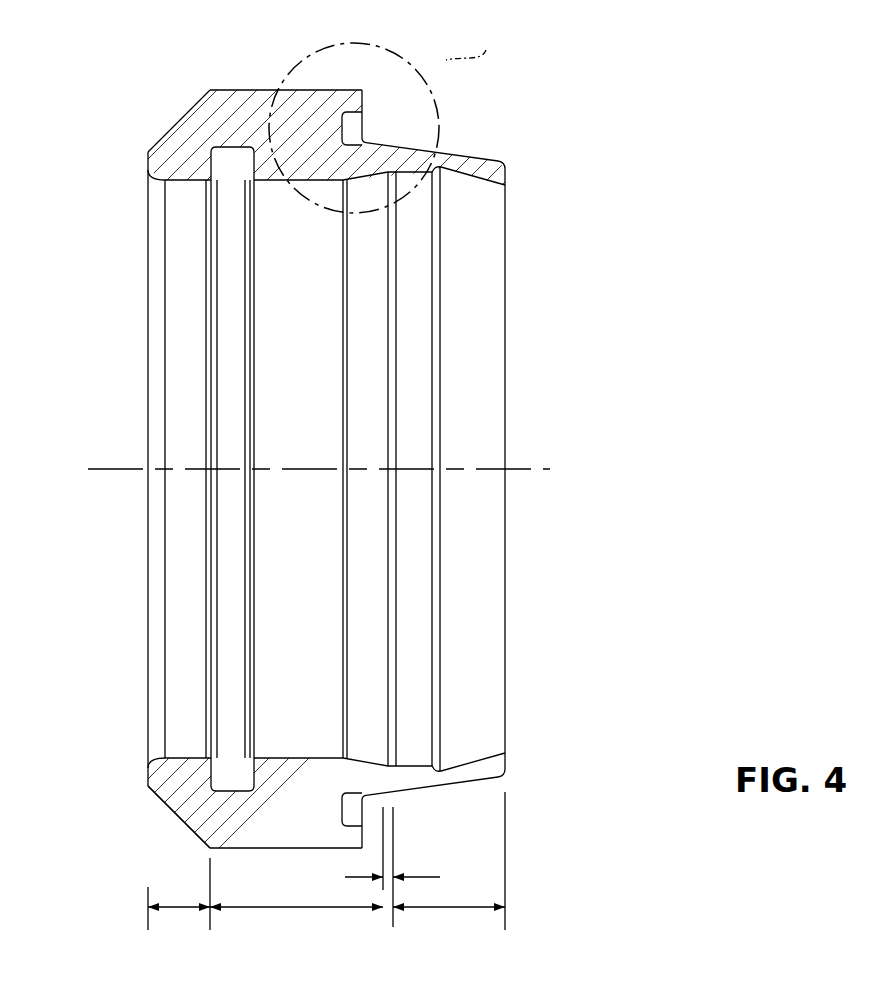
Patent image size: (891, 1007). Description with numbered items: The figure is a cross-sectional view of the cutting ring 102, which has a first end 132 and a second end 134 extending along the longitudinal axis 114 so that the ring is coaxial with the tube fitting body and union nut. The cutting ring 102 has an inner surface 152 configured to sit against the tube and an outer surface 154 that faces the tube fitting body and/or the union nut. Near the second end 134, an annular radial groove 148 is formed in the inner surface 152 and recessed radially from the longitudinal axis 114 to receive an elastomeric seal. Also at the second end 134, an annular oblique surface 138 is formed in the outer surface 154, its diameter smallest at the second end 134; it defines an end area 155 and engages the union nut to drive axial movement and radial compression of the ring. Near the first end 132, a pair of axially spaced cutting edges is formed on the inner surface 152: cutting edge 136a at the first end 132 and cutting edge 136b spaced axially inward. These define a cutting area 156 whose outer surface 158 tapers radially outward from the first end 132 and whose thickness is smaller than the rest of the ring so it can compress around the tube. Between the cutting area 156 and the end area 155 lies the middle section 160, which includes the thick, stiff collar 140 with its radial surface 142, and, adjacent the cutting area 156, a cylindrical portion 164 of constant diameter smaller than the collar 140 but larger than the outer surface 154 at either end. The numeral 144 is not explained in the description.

The cutting ring 102 is at (599, 74).
The longitudinal axis 114 is at (527, 470).
The first end 132 is at (504, 770).
The second end 134 is at (158, 806).
The cutting edge 136a is at (500, 752).
The cutting edge 136b is at (431, 689).
The annular oblique surface 138 is at (152, 781).
The collar 140 is at (222, 92).
The radial surface 142 is at (371, 90).
The recess wall 144 is at (354, 131).
The annular radial groove 148 is at (222, 782).
The inner surface 152 is at (168, 582).
The outer surface 154 is at (259, 86).
The end area 155 is at (193, 908).
The cutting area 156 is at (452, 908).
The outer surface of the cutting area 158 is at (446, 795).
The middle section 160 is at (285, 908).
The cylindrical portion 164 is at (414, 882).